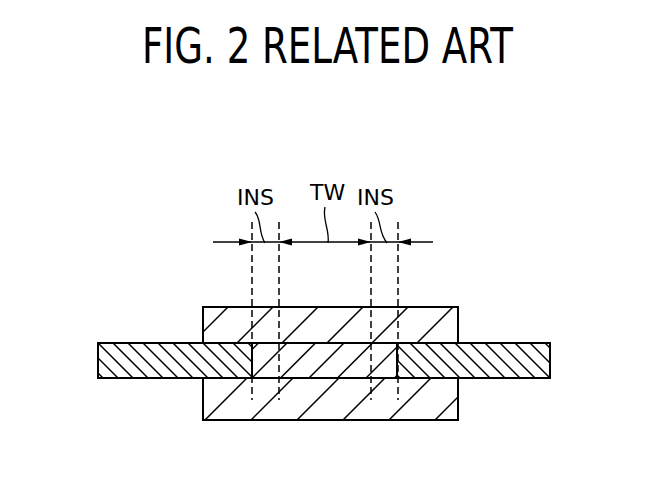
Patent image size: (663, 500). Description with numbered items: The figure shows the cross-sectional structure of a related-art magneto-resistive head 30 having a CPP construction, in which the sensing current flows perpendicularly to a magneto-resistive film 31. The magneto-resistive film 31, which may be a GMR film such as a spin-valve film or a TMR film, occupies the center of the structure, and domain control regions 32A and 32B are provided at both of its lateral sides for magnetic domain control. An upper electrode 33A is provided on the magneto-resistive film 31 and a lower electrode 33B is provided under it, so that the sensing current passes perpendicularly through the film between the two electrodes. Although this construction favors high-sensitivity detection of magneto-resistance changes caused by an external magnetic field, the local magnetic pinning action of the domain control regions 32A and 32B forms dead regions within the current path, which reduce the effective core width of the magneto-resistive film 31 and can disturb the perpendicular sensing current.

The magneto-resistive head 30 is at (575, 227).
The magneto-resistive film 31 is at (323, 347).
The domain control region 32A is at (537, 360).
The domain control region 32B is at (110, 362).
The upper electrode 33A is at (422, 313).
The lower electrode 33B is at (450, 399).